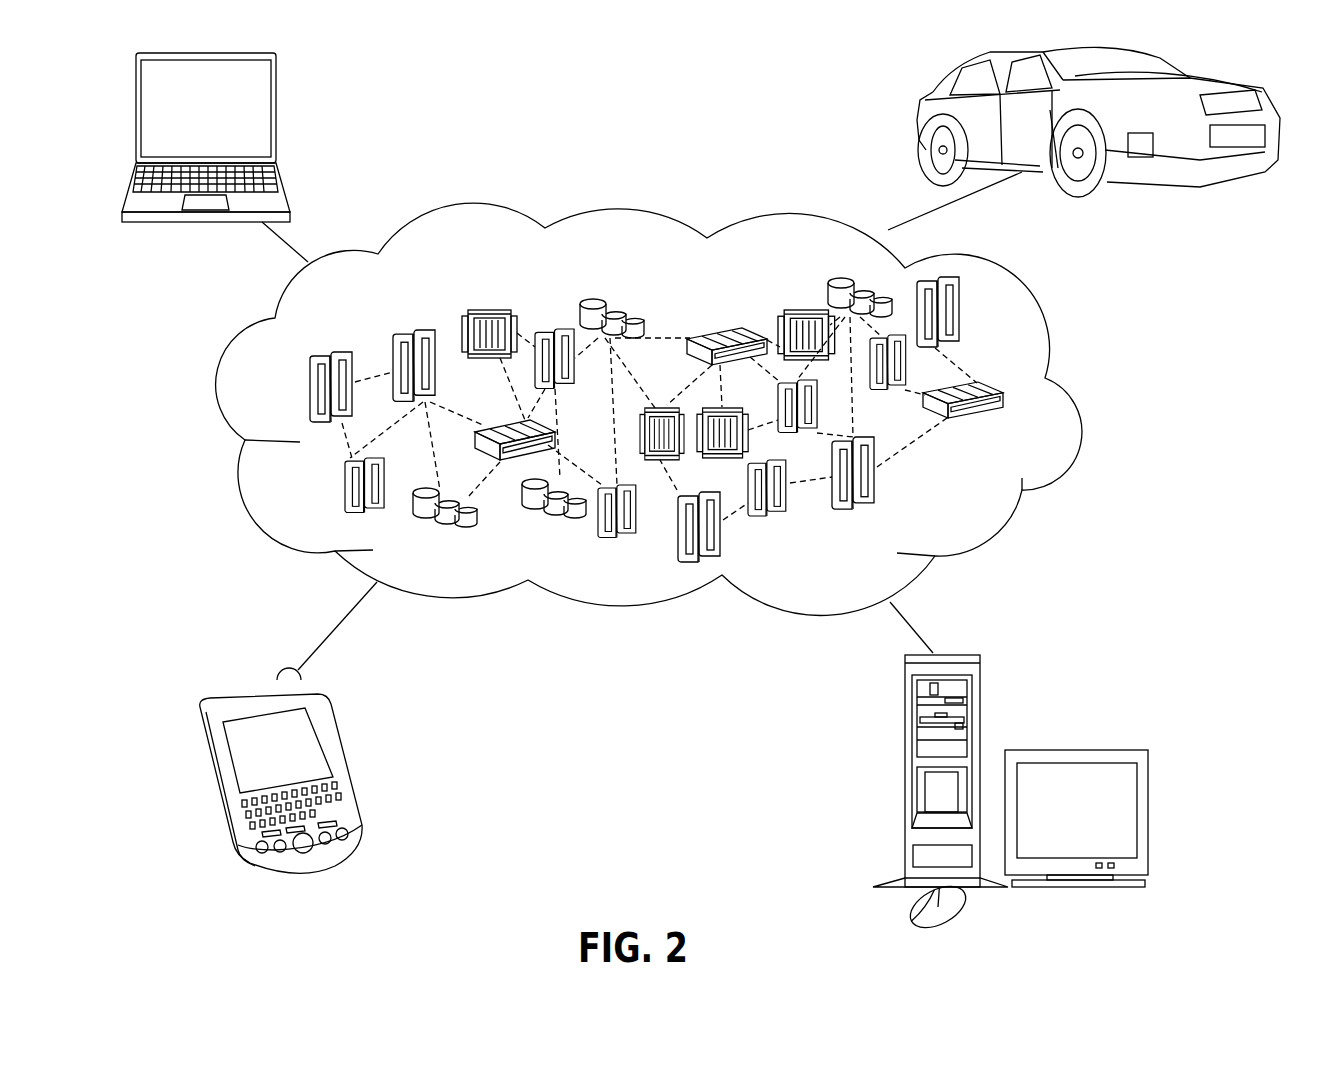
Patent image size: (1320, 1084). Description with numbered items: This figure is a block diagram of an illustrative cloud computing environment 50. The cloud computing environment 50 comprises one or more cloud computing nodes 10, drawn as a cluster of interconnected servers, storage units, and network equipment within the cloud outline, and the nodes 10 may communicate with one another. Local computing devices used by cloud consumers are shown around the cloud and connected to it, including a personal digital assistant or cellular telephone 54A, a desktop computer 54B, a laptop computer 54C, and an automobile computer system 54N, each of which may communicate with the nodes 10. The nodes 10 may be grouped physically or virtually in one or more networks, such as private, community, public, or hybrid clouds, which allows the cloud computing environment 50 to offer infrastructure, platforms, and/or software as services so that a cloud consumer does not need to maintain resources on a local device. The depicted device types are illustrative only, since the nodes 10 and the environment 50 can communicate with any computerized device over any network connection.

The cloud computing nodes 10 is at (983, 505).
The cloud computing environment 50 is at (1072, 395).
The personal digital assistant (PDA) or cellular telephone 54A is at (335, 730).
The desktop computer 54B is at (905, 717).
The laptop computer 54C is at (277, 92).
The automobile computer system 54N is at (919, 108).